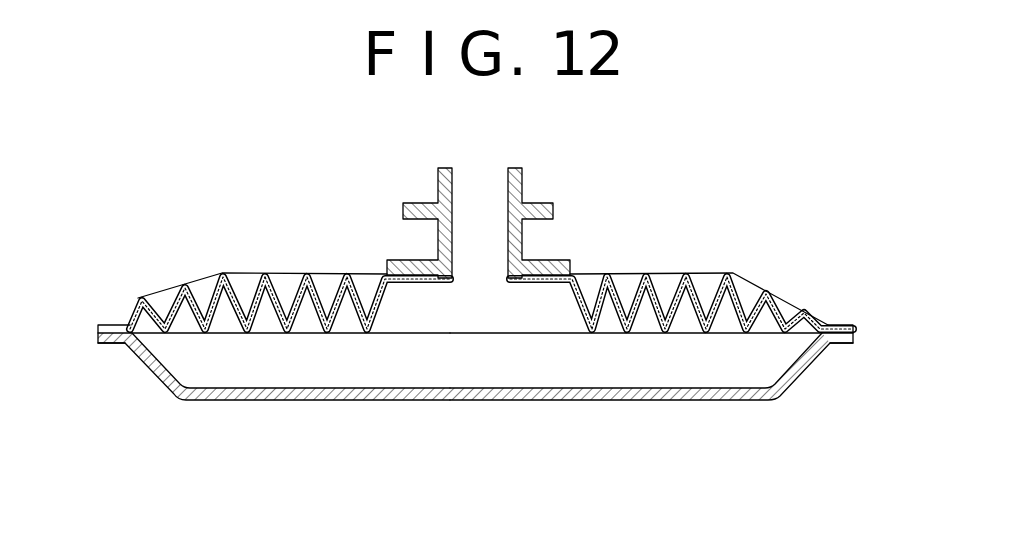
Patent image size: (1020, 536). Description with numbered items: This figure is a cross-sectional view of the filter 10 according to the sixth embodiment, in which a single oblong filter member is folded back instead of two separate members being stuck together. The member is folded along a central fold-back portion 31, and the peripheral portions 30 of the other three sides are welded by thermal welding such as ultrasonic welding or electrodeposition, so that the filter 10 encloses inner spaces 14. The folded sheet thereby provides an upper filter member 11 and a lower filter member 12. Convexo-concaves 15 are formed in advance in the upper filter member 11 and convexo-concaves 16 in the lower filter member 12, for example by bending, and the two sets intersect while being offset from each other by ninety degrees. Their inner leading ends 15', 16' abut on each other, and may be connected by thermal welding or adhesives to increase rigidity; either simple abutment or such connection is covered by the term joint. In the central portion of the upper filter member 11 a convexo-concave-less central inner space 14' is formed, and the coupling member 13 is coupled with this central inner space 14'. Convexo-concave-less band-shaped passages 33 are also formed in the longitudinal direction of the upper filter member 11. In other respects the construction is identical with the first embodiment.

The filter 10 is at (784, 270).
The upper filter member 11 is at (133, 303).
The lower filter member 12 is at (153, 373).
The coupling member 13 is at (523, 180).
The inner spaces 14 is at (674, 260).
The central inner space 14' is at (575, 255).
The convexo-concaves 15 is at (282, 253).
The inner leading ends 15' is at (274, 405).
The convexo-concaves 16 is at (651, 411).
The inner leading ends 16' is at (651, 411).
The peripheral portions 30 is at (107, 325).
The central fold-back portion 31 is at (838, 322).
The band-shaped passages 33 is at (323, 273).